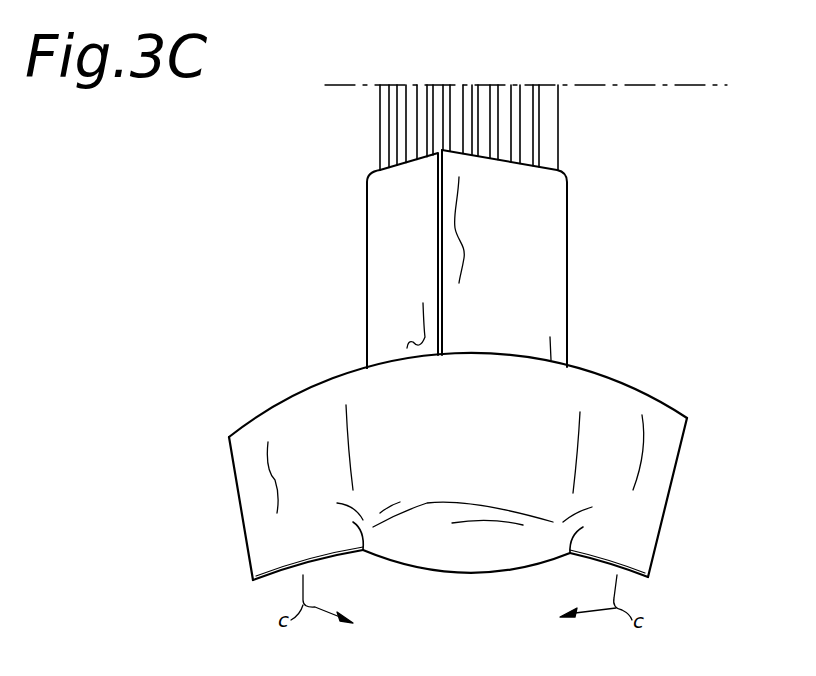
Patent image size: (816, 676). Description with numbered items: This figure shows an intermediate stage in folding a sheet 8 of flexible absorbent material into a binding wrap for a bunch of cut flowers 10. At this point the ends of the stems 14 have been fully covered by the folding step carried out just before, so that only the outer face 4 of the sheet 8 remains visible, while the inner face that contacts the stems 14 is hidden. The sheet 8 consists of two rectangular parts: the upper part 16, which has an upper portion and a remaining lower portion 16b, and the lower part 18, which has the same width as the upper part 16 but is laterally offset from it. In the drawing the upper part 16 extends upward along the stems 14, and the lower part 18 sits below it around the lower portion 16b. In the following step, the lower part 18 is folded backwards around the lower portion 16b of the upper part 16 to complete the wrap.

The bunch of cut flowers 10 is at (565, 132).
The stems 14 is at (413, 130).
The upper part 16 is at (523, 303).
The lower portion of the upper part 16b is at (388, 360).
The sheet 8 is at (615, 382).
The outer face 4 is at (640, 494).
The lower part 18 is at (255, 499).